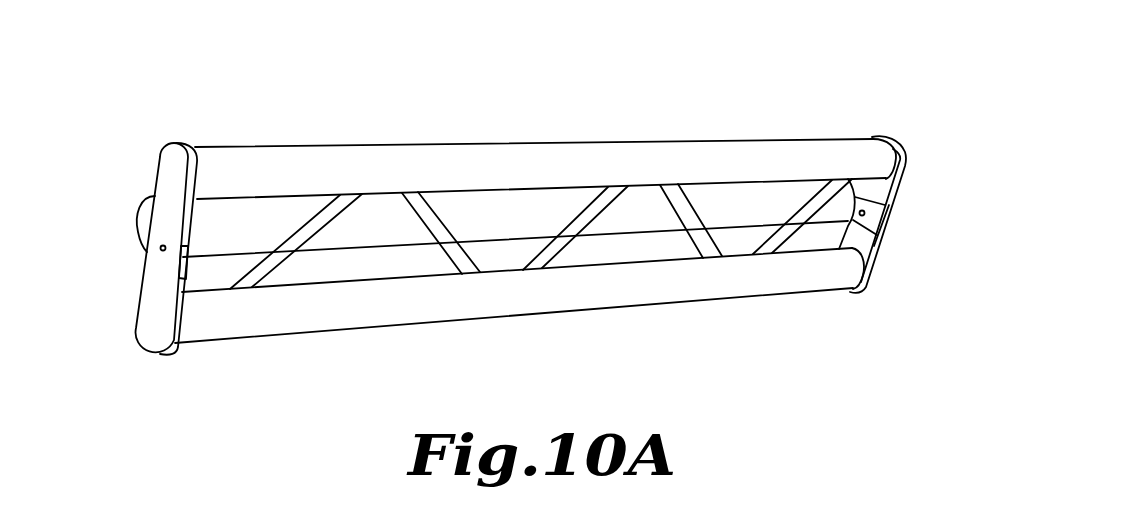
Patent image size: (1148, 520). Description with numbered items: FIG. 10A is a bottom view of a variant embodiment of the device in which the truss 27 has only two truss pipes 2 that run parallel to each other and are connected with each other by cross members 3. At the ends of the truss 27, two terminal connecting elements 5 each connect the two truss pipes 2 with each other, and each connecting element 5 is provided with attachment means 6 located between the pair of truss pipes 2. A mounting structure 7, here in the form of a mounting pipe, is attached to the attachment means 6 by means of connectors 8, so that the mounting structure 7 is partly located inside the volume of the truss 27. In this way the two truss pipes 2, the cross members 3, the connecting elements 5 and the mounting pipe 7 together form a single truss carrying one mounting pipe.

The truss 27 is at (833, 67).
The truss pipe 2 is at (723, 155).
The cross member 3 is at (293, 243).
The terminal connecting element 5 is at (175, 186).
The attachment means 6 is at (160, 248).
The mounting structure 7 is at (242, 228).
The connector 8 is at (140, 223).